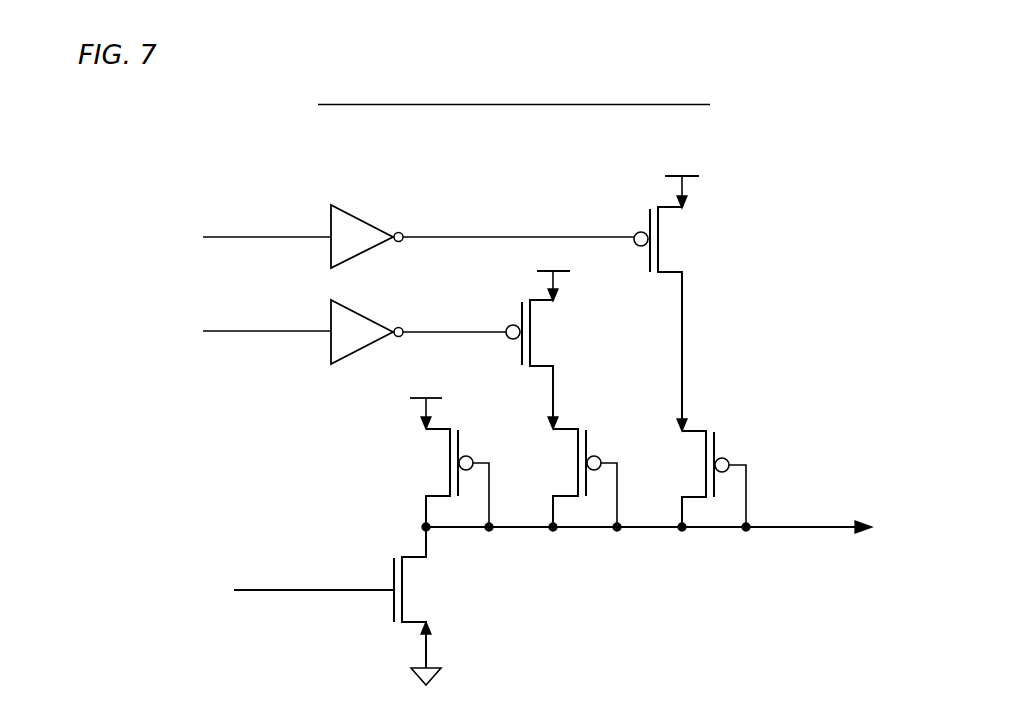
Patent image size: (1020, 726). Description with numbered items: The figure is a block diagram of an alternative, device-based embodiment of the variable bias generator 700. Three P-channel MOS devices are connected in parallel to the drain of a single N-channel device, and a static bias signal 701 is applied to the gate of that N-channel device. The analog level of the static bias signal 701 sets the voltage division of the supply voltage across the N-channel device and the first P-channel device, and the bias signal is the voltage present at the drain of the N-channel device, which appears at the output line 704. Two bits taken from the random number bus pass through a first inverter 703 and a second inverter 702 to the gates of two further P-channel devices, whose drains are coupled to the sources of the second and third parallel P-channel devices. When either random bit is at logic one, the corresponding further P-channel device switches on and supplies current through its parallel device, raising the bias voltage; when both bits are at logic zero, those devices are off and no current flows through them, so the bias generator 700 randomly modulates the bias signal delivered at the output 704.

The variable bias generator 700 is at (826, 113).
The static bias signal XBIAS 701 is at (330, 590).
The inverter 702 is at (364, 220).
The inverter 703 is at (363, 316).
The BIAS output signal line 704 is at (778, 529).